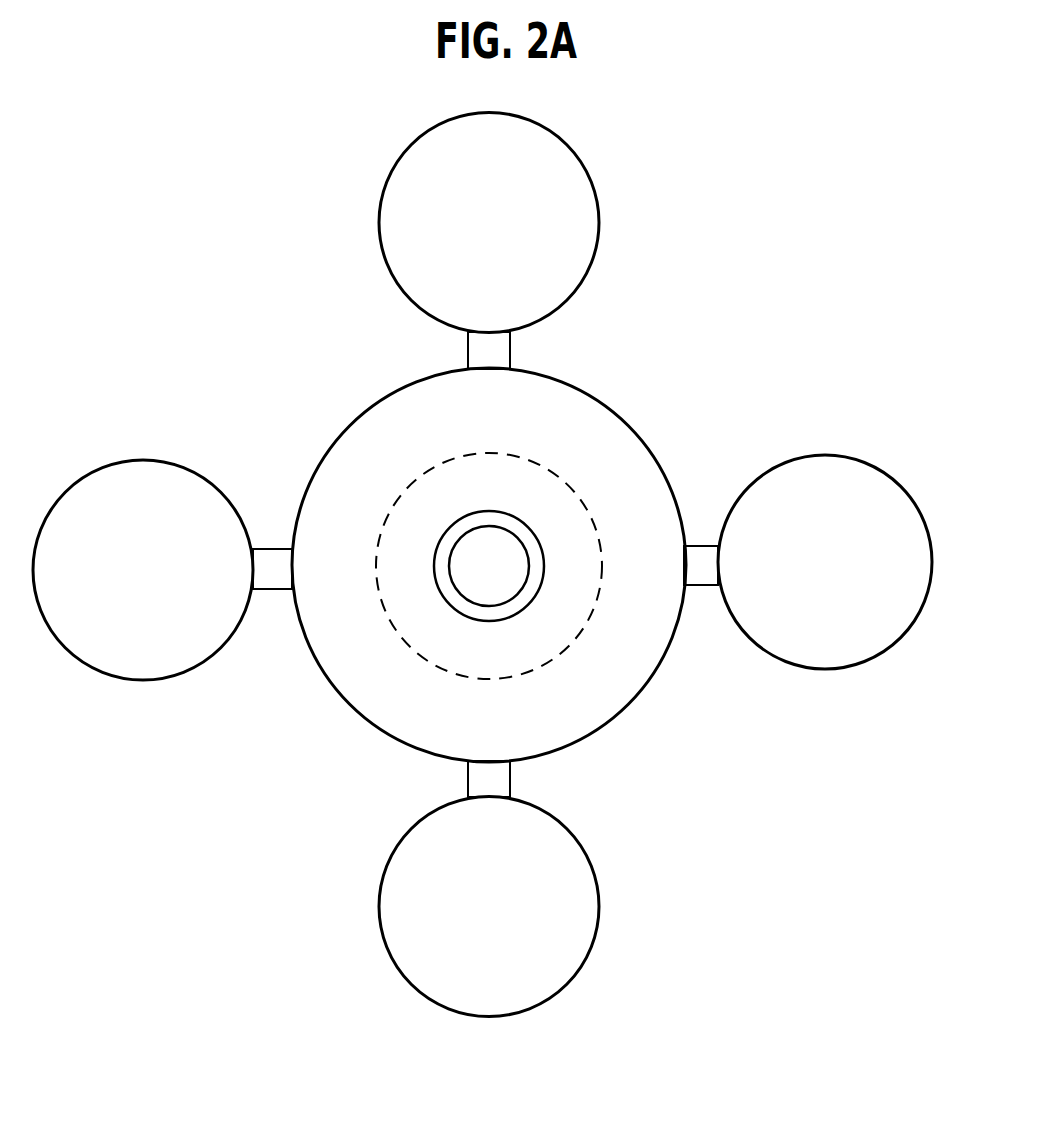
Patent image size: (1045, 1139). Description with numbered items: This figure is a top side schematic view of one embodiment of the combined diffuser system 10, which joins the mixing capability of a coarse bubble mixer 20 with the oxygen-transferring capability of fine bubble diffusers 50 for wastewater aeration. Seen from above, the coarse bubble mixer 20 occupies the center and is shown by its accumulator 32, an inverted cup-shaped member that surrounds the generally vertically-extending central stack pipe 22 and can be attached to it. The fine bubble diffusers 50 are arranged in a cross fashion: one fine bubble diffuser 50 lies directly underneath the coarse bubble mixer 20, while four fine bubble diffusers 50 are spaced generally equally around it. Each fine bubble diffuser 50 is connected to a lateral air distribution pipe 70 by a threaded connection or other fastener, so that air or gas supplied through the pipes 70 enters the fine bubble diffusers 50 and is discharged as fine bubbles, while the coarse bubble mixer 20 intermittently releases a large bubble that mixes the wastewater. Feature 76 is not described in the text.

The combined diffuser system 10 is at (171, 222).
The coarse bubble mixer 20 is at (683, 331).
The stack pipe 22 is at (443, 530).
The accumulator 32 is at (375, 402).
The fine bubble diffuser 50 is at (593, 180).
The pipe 70 is at (512, 353).
The central opening 76 is at (507, 582).